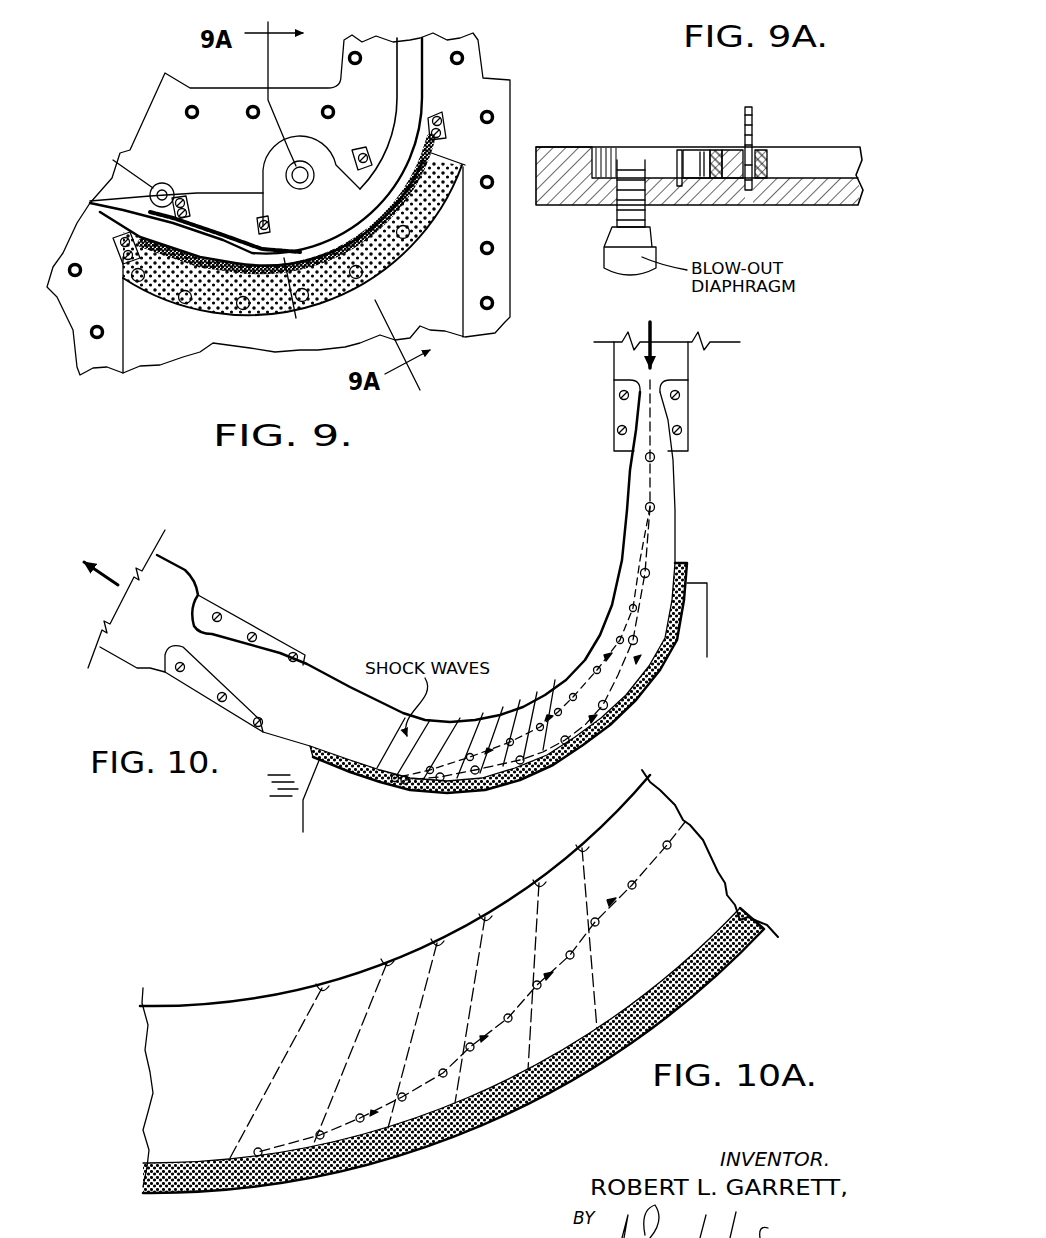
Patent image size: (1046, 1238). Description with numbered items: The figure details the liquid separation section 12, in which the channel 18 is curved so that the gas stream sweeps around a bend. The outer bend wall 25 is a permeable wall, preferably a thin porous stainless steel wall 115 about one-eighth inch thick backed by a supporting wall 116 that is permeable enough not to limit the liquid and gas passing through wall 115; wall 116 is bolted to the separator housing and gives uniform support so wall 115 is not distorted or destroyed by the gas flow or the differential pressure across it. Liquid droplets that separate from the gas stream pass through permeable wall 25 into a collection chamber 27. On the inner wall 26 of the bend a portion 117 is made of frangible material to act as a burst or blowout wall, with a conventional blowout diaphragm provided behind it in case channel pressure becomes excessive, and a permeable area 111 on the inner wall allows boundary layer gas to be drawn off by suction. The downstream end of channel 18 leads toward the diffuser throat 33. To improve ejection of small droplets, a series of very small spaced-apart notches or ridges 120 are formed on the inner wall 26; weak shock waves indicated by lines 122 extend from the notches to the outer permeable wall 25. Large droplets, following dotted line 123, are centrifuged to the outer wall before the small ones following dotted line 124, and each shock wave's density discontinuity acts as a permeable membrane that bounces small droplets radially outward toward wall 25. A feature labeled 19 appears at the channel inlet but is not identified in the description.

In FIG. 9, the liquid separation section 12 is at (515, 105).
In FIG. 9A, the liquid separation section 12 is at (804, 208).
In FIG. 10, the liquid separation section 12 is at (430, 624).
In FIG. 10A, the liquid separation section 12 is at (300, 953).
In FIG. 9, the channel 18 is at (322, 228).
In FIG. 9A, the channel 18 is at (693, 162).
In FIG. 10, the channel 18 is at (566, 724).
In FIG. 10A, the channel 18 is at (700, 878).
In FIG. 10, the inlet nozzle throat 19 is at (652, 395).
In FIG. 9, the permeable outer bend wall 25 is at (233, 255).
In FIG. 10, the permeable outer bend wall 25 is at (365, 774).
In FIG. 10A, the permeable outer bend wall 25 is at (212, 1175).
In FIG. 9, the inner wall 26 is at (376, 150).
In FIG. 10A, the inner wall 26 is at (227, 1035).
In FIG. 9A, the collection chamber 27 is at (828, 165).
In FIG. 10, the collection chamber 27 is at (360, 826).
In FIG. 10, the throat 33 is at (195, 637).
In FIG. 9A, the permeable area 111 is at (719, 150).
In FIG. 9, the porous stainless steel wall 115 is at (290, 301).
In FIG. 9, the supporting wall 116 is at (372, 258).
In FIG. 9A, the supporting wall 116 is at (759, 155).
In FIG. 9, the frangible wall portion 117 is at (357, 190).
In FIG. 9A, the frangible wall portion 117 is at (676, 157).
In FIG. 10A, the notches or ridges 120 is at (588, 849).
In FIG. 10A, the shock waves 122 is at (615, 950).
In FIG. 10, the large droplet path 123 is at (635, 650).
In FIG. 10, the small droplet path 124 is at (625, 634).
In FIG. 10A, the small droplet path 124 is at (648, 868).